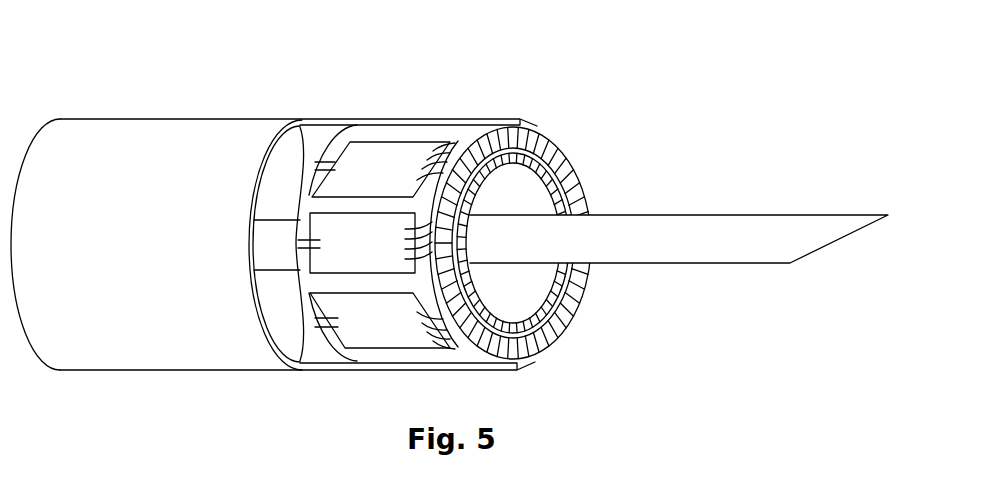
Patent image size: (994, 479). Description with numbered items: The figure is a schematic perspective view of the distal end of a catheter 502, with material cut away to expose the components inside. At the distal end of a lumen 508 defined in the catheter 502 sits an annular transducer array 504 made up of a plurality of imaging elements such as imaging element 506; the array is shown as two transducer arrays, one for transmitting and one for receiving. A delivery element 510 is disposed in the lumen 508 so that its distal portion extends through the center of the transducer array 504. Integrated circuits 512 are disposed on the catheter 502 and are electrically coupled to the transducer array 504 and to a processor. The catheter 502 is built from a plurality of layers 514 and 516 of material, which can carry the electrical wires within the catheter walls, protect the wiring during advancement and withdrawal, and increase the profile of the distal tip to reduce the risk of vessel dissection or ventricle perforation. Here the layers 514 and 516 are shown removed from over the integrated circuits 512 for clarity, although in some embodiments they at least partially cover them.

The catheter 502 is at (274, 187).
The annular transducer array 504 is at (573, 238).
The imaging element 506 is at (553, 140).
The lumen 508 is at (520, 298).
The delivery element 510 is at (768, 227).
The integrated circuits 512 is at (390, 162).
The layer 514 is at (303, 153).
The layer 516 is at (223, 130).